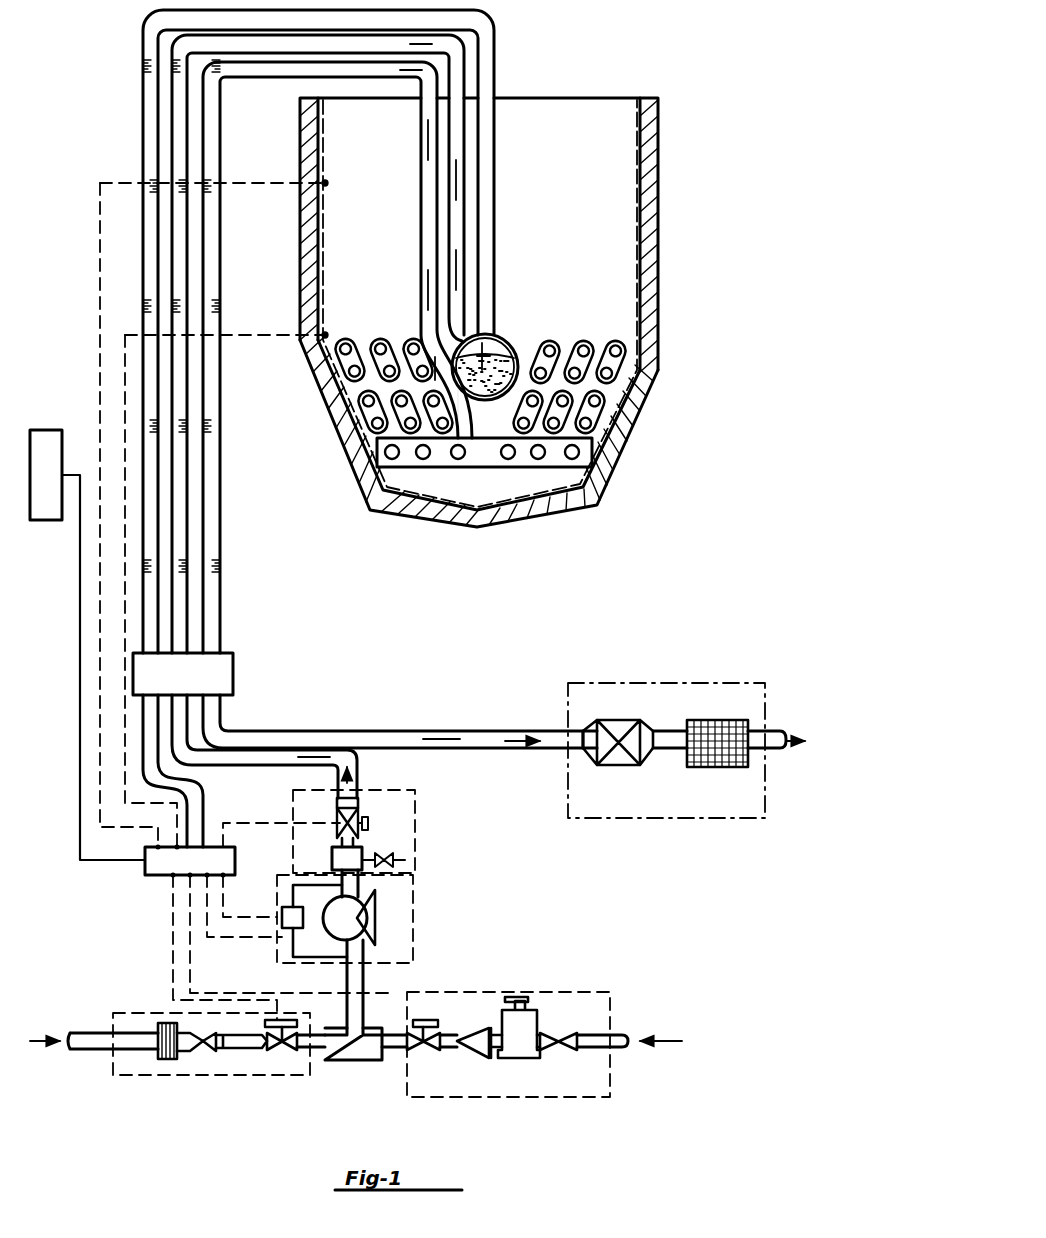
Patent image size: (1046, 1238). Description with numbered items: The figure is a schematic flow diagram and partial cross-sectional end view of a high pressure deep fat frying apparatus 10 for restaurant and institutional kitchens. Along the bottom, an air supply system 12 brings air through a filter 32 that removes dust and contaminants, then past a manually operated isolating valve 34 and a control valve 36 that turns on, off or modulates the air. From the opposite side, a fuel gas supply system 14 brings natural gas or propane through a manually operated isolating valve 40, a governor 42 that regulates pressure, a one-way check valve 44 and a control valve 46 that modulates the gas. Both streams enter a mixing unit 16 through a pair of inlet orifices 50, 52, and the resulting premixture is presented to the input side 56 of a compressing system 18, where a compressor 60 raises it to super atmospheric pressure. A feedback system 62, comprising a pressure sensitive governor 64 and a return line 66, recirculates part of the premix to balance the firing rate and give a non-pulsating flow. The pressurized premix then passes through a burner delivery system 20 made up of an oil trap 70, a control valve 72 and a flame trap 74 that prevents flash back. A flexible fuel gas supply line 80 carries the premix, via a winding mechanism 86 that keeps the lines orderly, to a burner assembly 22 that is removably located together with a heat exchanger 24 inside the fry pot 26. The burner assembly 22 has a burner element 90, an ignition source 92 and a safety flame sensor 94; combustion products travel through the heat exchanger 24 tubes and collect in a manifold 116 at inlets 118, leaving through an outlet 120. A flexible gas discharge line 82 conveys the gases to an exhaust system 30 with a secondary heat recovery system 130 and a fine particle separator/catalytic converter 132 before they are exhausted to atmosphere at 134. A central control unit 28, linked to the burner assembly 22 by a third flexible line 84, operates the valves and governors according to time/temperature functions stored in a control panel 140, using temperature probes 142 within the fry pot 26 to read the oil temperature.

The deep fat frying apparatus 10 is at (660, 404).
The air supply system 12 is at (140, 1013).
The fuel gas supply system 14 is at (565, 990).
The mixing unit 16 is at (397, 989).
The compressing system 18 is at (415, 892).
The burner delivery system 20 is at (415, 800).
The burner assembly 22 is at (507, 329).
The heat exchanger 24 is at (597, 336).
The fry pot 26 is at (650, 187).
The central control unit 28 is at (157, 863).
The exhaust system 30 is at (680, 820).
The filter 32 is at (168, 1060).
The isolating valve 34 is at (205, 1047).
The control valve 36 is at (297, 1050).
The isolating valve 40 is at (558, 1053).
The governor 42 is at (520, 1055).
The check valve 44 is at (465, 1060).
The control valve 46 is at (418, 1053).
The inlet orifice 50 is at (392, 1047).
The inlet orifice 52 is at (313, 1052).
The input side 56 is at (347, 1007).
The compressor 60 is at (357, 922).
The feedback system 62 is at (317, 865).
The pressure sensitive governor 64 is at (280, 920).
The return line 66 is at (279, 893).
The oil trap 70 is at (397, 860).
The control valve 72 is at (362, 858).
The flame trap 74 is at (385, 797).
The flexible fuel gas supply line 80 is at (178, 617).
The flexible gas discharge line 82 is at (212, 570).
The flexible line 84 is at (148, 528).
The winding mechanism 86 is at (223, 668).
The burner element 90 is at (480, 390).
The ignition source 92 is at (517, 353).
The safety flame sensor 94 is at (453, 343).
The manifold 116 is at (590, 507).
The inlets 118 is at (573, 450).
The outlet 120 is at (455, 430).
The secondary heat recovery system 130 is at (622, 753).
The fine particle separator/catalytic converter 132 is at (718, 757).
The exhaust to atmosphere 134 is at (785, 750).
The control panel 140 is at (45, 510).
The temperature probes 142 is at (365, 278).